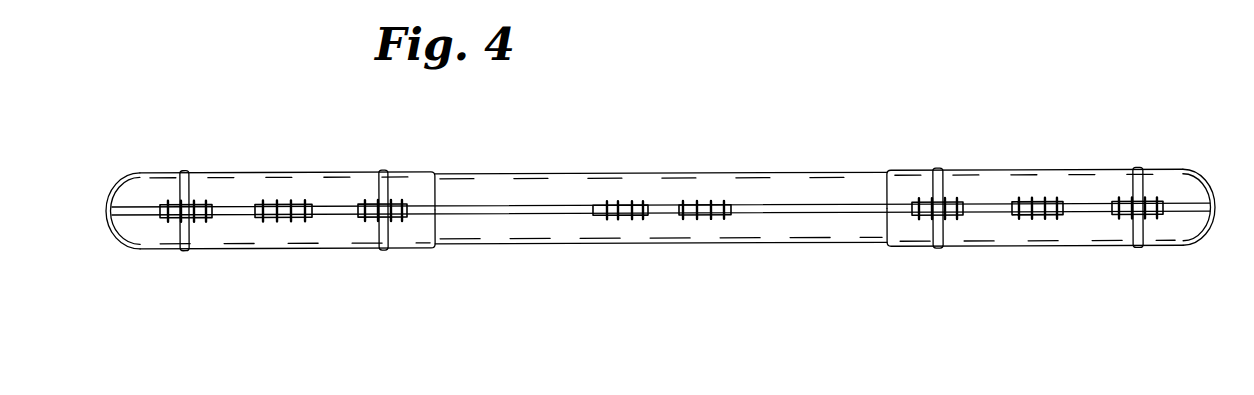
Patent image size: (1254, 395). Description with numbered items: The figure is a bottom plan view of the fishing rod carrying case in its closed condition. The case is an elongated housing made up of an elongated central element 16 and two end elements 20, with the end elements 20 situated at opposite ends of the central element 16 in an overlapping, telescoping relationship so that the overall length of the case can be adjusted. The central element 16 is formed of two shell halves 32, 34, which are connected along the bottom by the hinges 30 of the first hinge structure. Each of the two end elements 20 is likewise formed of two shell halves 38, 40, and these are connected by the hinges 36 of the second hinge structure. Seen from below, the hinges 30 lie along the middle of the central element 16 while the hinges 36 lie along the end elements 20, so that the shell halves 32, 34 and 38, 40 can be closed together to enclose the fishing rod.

The central element 16 is at (582, 175).
The end elements 20 is at (163, 173).
The hinges 30 is at (613, 220).
The shell half 32 is at (828, 225).
The shell half 34 is at (782, 186).
The hinges 36 is at (172, 218).
The shell half 38 is at (308, 233).
The shell half 40 is at (292, 187).